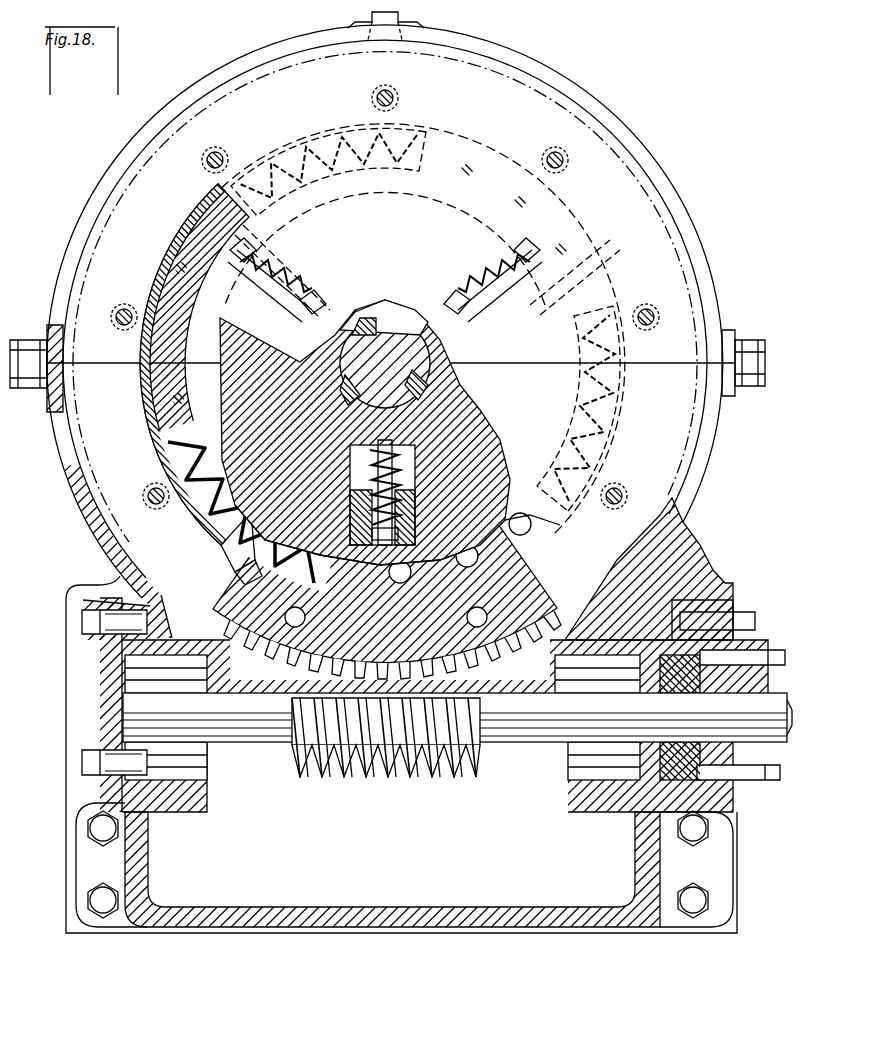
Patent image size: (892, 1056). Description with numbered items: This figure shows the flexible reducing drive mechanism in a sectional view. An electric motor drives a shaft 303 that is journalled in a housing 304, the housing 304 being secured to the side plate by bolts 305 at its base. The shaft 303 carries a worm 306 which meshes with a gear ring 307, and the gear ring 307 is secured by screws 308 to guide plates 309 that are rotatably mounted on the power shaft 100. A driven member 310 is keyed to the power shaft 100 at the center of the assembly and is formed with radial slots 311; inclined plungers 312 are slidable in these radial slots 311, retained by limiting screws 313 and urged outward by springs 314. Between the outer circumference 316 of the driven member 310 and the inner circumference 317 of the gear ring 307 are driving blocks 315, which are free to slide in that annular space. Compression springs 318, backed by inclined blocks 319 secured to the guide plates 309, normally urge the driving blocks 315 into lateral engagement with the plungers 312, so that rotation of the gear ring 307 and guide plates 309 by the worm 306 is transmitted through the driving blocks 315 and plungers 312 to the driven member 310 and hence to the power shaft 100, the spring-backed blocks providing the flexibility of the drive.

The power shaft 100 is at (395, 325).
The shaft 303 is at (512, 745).
The housing 304 is at (682, 560).
The bolts 305 is at (712, 896).
The worm 306 is at (396, 778).
The gear ring 307 is at (262, 650).
The screws 308 is at (530, 596).
The guide plates 309 is at (222, 530).
The driven member 310 is at (445, 392).
The radial slots 311 is at (465, 440).
The inclined plungers 312 is at (395, 500).
The limiting screws 313 is at (382, 492).
The springs 314 is at (385, 535).
The driving blocks 315 is at (243, 582).
The outer circumference 316 is at (256, 378).
The inner circumference 317 is at (240, 566).
The compression springs 318 is at (215, 508).
The inclined blocks 319 is at (165, 376).